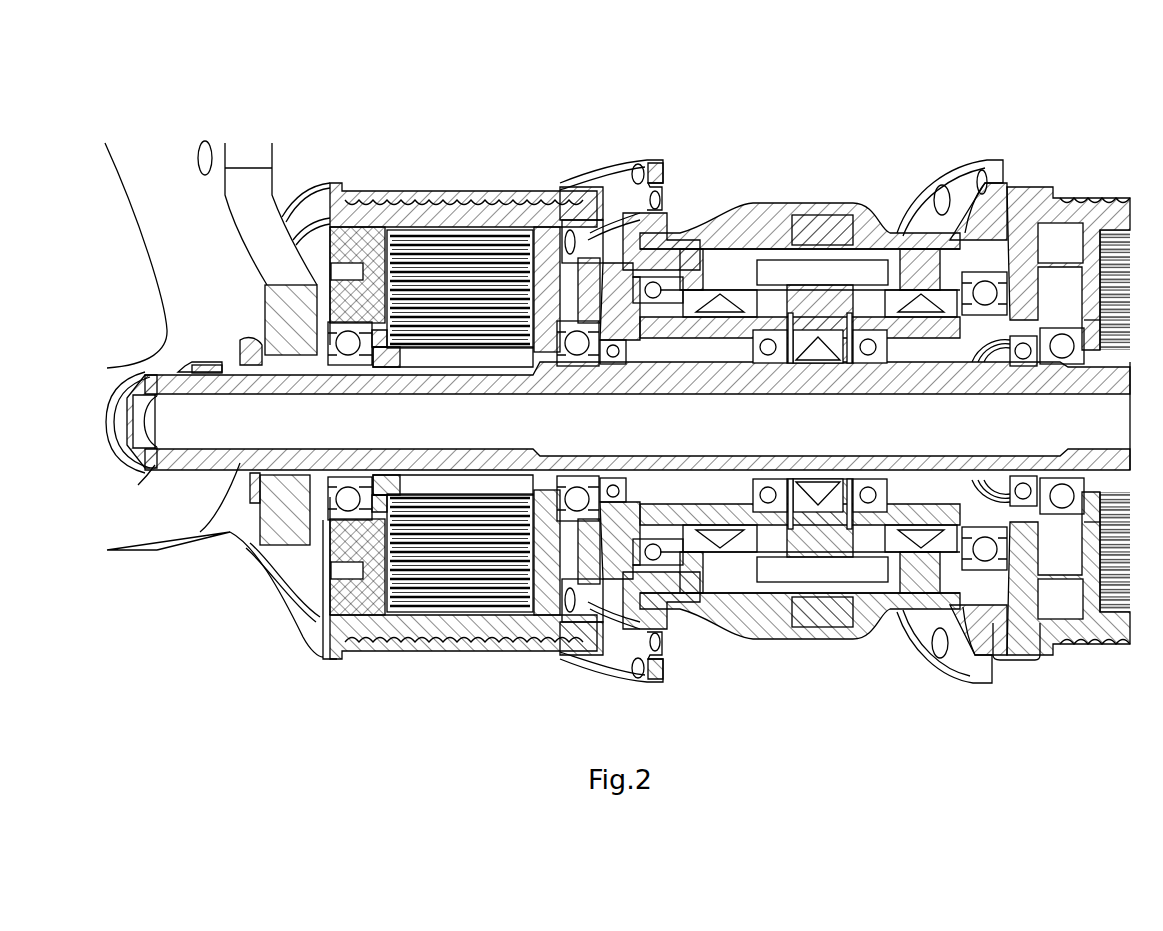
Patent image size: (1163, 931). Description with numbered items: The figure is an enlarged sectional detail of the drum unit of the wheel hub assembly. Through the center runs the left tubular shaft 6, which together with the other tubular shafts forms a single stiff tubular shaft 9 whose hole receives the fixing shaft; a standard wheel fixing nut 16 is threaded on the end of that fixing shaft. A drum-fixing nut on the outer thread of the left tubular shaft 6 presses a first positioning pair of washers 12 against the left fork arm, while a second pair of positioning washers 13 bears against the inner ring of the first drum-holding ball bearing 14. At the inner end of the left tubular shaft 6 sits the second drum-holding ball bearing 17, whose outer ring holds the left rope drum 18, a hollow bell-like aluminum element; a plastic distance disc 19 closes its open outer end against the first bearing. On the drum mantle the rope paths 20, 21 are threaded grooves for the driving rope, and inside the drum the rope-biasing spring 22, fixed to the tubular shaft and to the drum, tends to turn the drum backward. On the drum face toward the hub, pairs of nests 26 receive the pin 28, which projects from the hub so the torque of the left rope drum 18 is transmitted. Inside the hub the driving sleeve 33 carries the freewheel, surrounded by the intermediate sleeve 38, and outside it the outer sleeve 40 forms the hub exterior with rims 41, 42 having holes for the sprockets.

The left tubular shaft 6 is at (200, 532).
The tubular shaft 9 is at (207, 400).
The first positioning pair of washers 12 is at (255, 345).
The second pair of positioning washers 13 is at (332, 355).
The first drum-holding ball bearing 14 is at (380, 358).
The wheel fixing nut 16 is at (150, 467).
The second drum-holding ball bearing 17 is at (540, 348).
The left rope drum 18 is at (440, 205).
The distance disc 19 is at (345, 240).
The rope path 20 is at (390, 642).
The rope path 21 is at (510, 648).
The rope-biasing spring 22 is at (500, 240).
The nests 26 is at (688, 200).
The pin 28 is at (598, 575).
The driving sleeve 33 is at (722, 328).
The intermediate sleeve 38 is at (733, 232).
The outer sleeve 40 is at (713, 237).
The rim 41 is at (650, 168).
The rim 42 is at (997, 165).